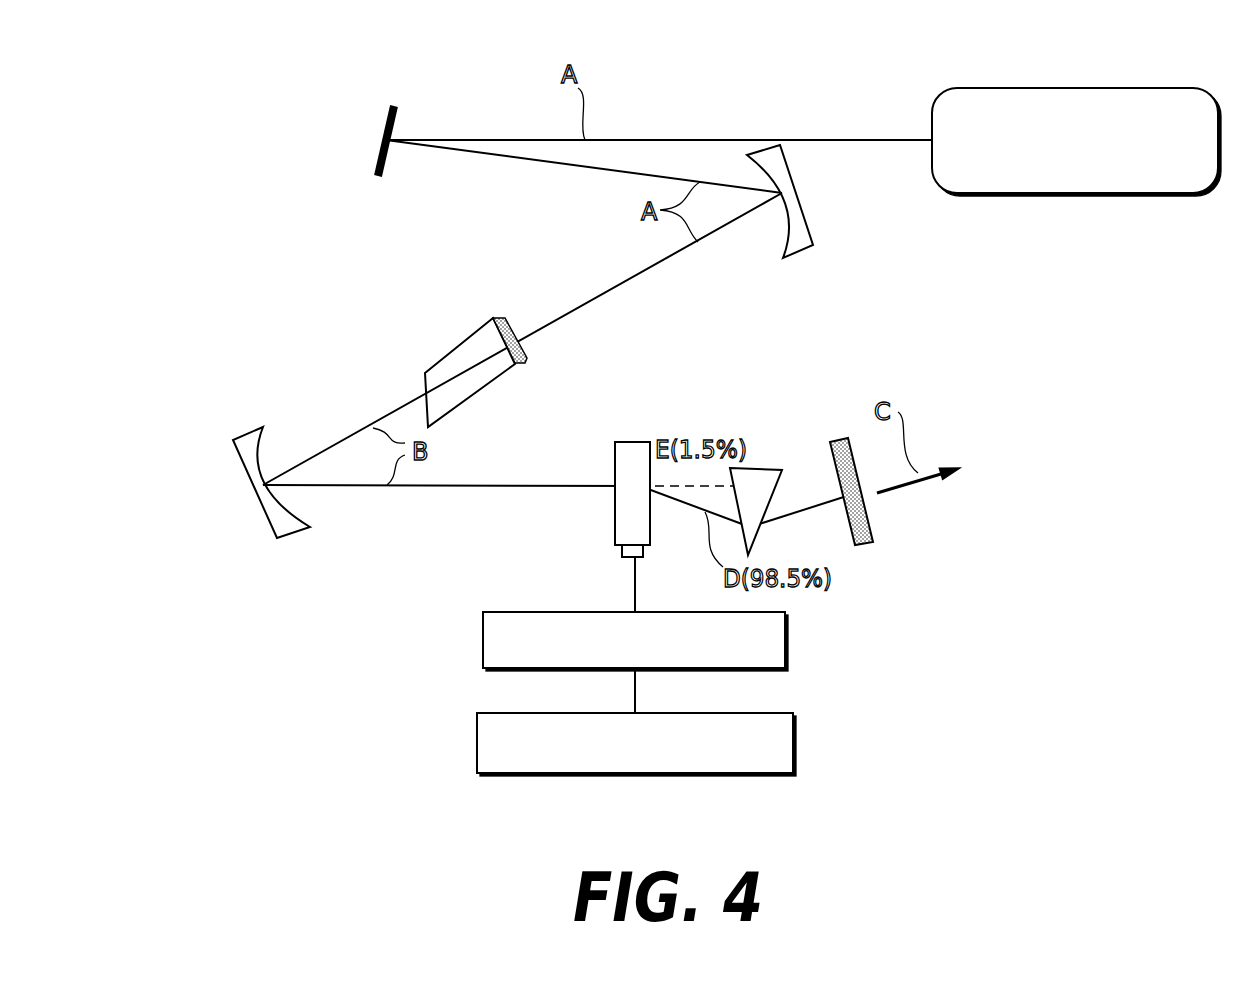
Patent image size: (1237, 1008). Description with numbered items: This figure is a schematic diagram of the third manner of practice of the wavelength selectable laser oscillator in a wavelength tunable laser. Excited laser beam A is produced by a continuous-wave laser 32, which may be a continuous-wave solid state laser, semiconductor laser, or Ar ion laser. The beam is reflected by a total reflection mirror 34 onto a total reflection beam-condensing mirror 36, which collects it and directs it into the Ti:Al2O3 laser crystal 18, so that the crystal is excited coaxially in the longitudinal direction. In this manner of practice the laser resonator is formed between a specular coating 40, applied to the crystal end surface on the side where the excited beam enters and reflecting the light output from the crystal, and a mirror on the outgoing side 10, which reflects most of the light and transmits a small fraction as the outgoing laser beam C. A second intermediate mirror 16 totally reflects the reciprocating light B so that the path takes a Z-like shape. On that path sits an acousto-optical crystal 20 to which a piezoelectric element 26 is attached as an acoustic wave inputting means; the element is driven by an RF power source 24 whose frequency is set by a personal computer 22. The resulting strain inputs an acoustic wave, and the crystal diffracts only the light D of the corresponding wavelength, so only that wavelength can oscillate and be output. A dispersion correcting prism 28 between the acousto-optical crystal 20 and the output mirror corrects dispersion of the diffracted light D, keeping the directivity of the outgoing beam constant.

The mirror on the outgoing side 10 is at (868, 545).
The second intermediate mirror 16 is at (262, 523).
The Ti:Al2O3 laser crystal 18 is at (425, 382).
The acousto-optical crystal 20 is at (615, 505).
The personal computer 22 is at (793, 752).
The RF power source 24 is at (785, 652).
The piezoelectric element 26 is at (622, 555).
The dispersion correcting prism 28 is at (763, 467).
The continuous-wave laser 32 is at (1070, 178).
The total reflection mirror 34 is at (387, 132).
The total reflection beam-condensing mirror 36 is at (815, 235).
The specular coating 40 is at (493, 315).